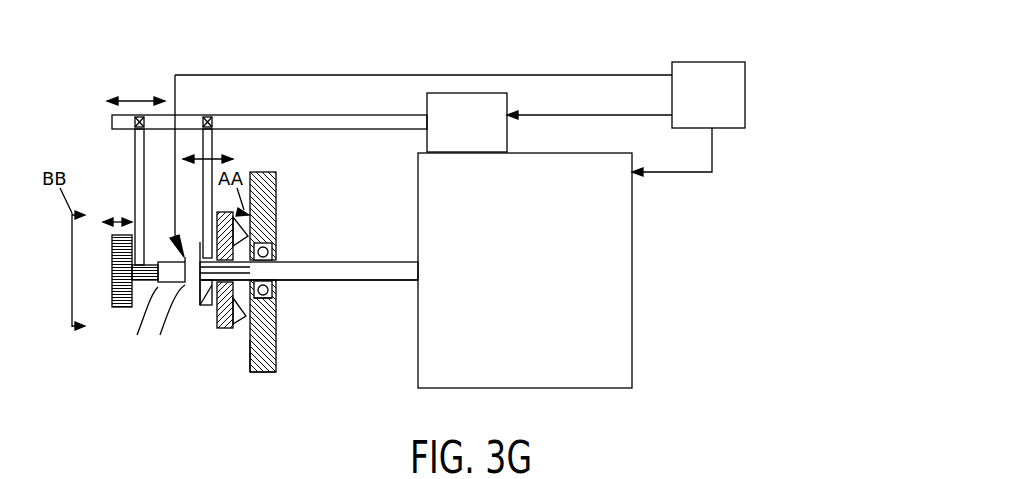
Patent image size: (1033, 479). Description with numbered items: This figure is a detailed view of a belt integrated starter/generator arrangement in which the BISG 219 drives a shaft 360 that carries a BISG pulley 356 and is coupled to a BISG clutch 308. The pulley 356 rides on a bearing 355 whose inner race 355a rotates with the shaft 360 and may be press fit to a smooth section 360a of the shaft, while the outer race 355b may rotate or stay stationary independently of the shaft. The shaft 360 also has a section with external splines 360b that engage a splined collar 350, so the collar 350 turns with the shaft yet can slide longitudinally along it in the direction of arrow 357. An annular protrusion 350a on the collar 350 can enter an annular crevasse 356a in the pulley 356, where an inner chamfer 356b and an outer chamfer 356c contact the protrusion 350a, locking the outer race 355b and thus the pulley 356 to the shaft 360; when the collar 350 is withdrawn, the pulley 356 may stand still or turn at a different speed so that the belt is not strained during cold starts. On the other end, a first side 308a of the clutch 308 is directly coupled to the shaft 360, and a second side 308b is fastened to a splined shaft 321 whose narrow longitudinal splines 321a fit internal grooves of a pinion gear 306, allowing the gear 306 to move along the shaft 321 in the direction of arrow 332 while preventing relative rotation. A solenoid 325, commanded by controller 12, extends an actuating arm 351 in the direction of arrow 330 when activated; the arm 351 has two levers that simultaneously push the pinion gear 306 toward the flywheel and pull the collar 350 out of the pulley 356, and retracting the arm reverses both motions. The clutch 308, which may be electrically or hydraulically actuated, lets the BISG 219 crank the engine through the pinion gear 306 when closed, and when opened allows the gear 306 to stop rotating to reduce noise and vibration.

The controller 12 is at (719, 105).
The BISG 219 is at (596, 268).
The pinion gear 306 is at (122, 280).
The BISG clutch 308 is at (140, 334).
The first side of BISG clutch 308a is at (179, 287).
The second side of BISG clutch 308b is at (124, 324).
The splined shaft 321 is at (167, 262).
The splines 321a is at (152, 281).
The solenoid 325 is at (452, 132).
The arrow 330 is at (123, 100).
The arrow 332 is at (115, 218).
The splined collar 350 is at (224, 310).
The annular protrusion 350a is at (243, 326).
The actuating arm 351 is at (198, 122).
The bearing 355 is at (285, 248).
The inner race 355a is at (277, 283).
The outer race 355b is at (272, 297).
The BISG pulley 356 is at (270, 194).
The annular crevasse 356a is at (268, 302).
The inner chamfer 356b is at (268, 372).
The outer chamfer 356c is at (258, 373).
The arrow 357 is at (215, 166).
The shaft 360 is at (353, 281).
The smooth section 360a is at (415, 279).
The external splines 360b is at (208, 283).